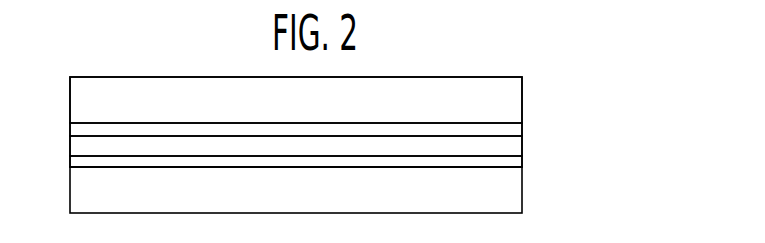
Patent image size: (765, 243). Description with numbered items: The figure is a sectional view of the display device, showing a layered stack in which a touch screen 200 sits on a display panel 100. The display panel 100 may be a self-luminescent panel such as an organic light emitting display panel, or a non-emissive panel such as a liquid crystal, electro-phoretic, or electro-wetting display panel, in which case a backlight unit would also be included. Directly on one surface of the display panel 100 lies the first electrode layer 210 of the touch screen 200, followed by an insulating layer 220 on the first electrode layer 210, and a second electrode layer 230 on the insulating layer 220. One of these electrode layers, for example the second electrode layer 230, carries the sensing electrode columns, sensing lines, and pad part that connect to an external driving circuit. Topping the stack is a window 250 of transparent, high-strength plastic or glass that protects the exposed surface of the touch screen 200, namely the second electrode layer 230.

The display panel 100 is at (510, 199).
The touch screen 200 is at (587, 80).
The first electrode layer 210 is at (510, 161).
The insulating layer 220 is at (510, 144).
The second electrode layer 230 is at (510, 127).
The window 250 is at (510, 95).